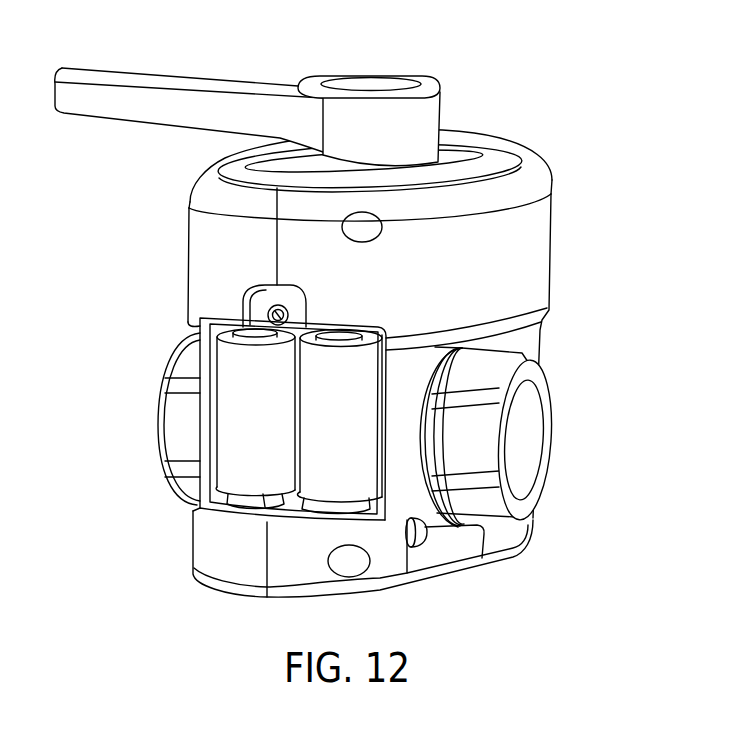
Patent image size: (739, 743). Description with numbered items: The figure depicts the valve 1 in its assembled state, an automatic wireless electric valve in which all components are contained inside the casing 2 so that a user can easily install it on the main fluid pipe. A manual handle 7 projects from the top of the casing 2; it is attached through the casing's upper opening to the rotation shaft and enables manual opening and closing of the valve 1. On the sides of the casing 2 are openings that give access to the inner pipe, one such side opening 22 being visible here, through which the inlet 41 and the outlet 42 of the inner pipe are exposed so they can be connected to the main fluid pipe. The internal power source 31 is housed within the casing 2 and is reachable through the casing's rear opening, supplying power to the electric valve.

The valve 1 is at (359, 335).
The casing 2 is at (552, 243).
The manual handle 7 is at (135, 110).
The side opening 22 is at (430, 528).
The internal power source 31 is at (223, 428).
The inlet 41 is at (528, 437).
The outlet 42 is at (160, 403).